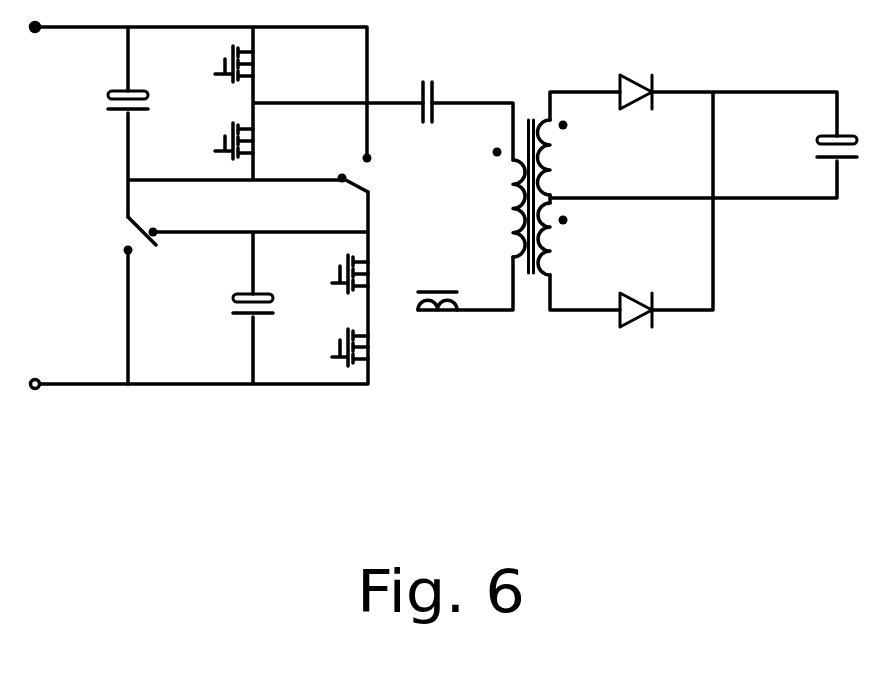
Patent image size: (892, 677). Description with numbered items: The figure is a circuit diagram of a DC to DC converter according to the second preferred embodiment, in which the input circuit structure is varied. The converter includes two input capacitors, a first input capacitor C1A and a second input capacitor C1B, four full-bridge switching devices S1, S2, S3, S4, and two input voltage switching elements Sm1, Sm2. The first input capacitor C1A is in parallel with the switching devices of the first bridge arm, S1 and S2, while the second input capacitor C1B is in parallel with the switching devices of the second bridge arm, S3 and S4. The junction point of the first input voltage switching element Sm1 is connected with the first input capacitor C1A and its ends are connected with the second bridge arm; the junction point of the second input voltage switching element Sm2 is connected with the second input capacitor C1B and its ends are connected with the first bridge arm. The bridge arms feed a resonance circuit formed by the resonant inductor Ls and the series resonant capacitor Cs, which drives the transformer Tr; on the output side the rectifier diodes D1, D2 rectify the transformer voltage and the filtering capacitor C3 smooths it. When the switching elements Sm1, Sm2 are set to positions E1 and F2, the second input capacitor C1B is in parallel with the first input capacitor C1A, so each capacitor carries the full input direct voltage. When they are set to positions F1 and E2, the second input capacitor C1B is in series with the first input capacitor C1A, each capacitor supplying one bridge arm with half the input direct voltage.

The first input capacitor C1A is at (97, 98).
The second input capacitor C1B is at (216, 304).
The full-bridge switching device S1 is at (215, 64).
The full-bridge switching device S2 is at (215, 141).
The full-bridge switching device S3 is at (332, 274).
The full-bridge switching device S4 is at (332, 347).
The series resonant capacitor Cs is at (435, 84).
The resonant inductor Ls is at (437, 319).
The transformer Tr is at (521, 197).
The rectifier diode D1 is at (637, 106).
The rectifier diode D2 is at (637, 295).
The filtering capacitor C3 is at (810, 139).
The first input voltage switching element Sm1 is at (119, 231).
The second input voltage switching element Sm2 is at (338, 167).
The switch position E1 is at (109, 311).
The switch position E2 is at (330, 197).
The switch position F1 is at (169, 219).
The switch position F2 is at (388, 154).